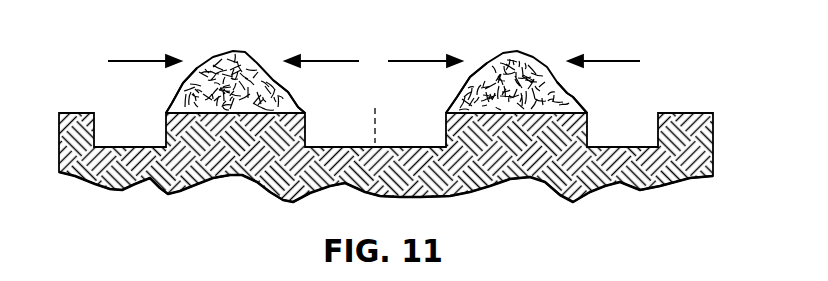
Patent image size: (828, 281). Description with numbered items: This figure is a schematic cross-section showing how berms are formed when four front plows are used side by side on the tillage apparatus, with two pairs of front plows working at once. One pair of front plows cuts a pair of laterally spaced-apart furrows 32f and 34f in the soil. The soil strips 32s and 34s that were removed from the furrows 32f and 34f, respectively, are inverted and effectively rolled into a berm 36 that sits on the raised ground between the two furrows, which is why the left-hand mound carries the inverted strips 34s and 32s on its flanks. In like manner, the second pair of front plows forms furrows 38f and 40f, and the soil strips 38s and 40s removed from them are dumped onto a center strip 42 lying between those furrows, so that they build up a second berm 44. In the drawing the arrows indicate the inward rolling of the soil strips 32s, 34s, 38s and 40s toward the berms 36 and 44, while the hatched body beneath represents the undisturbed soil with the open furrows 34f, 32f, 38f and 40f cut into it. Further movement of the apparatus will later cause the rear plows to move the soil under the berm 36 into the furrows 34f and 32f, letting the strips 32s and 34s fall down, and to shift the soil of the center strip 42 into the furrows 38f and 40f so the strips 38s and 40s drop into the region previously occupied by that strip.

The soil strip 32s is at (300, 106).
The furrow 32f is at (353, 147).
The soil strip 34s is at (182, 96).
The furrow 34f is at (129, 147).
The berm 36 is at (242, 52).
The soil strip 38s is at (456, 98).
The furrow 38f is at (395, 147).
The soil strip 40s is at (545, 64).
The furrow 40f is at (623, 147).
The center strip 42 is at (533, 167).
The berm 44 is at (519, 51).